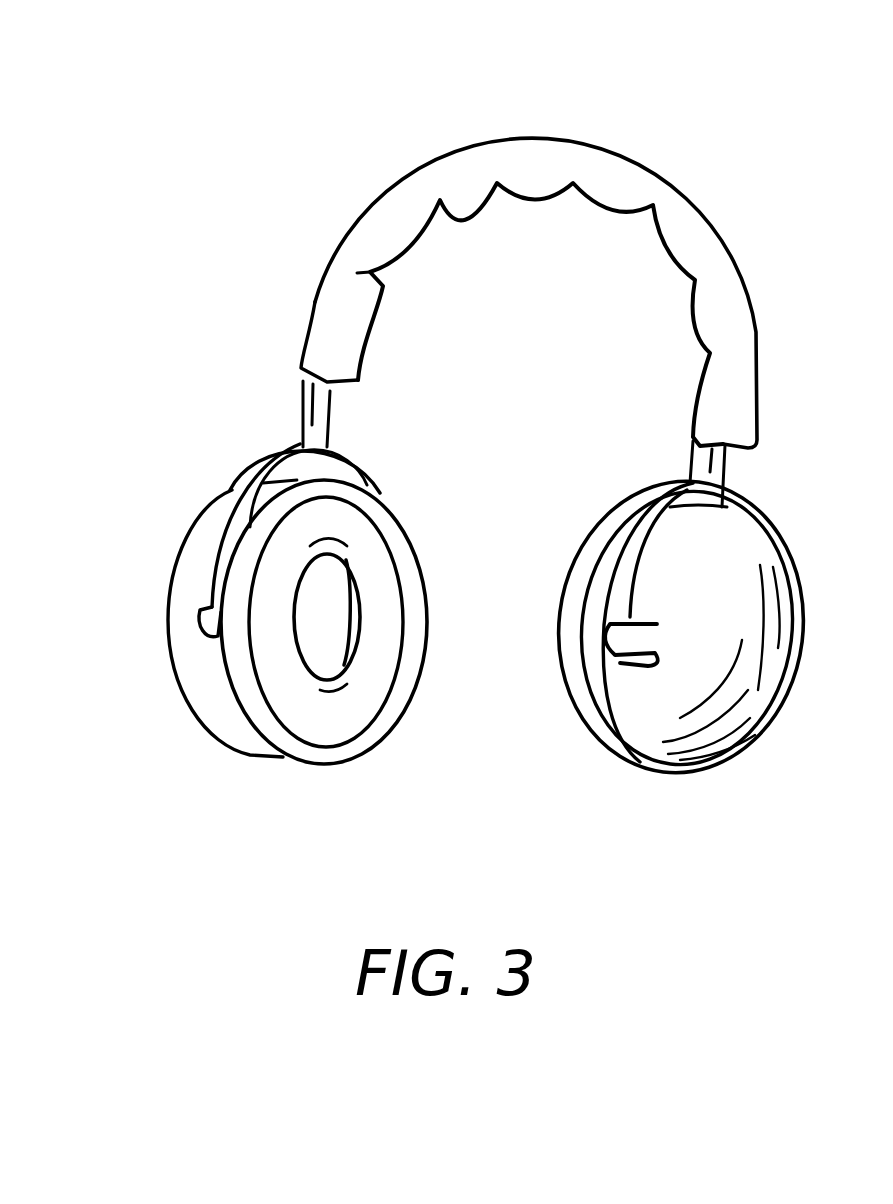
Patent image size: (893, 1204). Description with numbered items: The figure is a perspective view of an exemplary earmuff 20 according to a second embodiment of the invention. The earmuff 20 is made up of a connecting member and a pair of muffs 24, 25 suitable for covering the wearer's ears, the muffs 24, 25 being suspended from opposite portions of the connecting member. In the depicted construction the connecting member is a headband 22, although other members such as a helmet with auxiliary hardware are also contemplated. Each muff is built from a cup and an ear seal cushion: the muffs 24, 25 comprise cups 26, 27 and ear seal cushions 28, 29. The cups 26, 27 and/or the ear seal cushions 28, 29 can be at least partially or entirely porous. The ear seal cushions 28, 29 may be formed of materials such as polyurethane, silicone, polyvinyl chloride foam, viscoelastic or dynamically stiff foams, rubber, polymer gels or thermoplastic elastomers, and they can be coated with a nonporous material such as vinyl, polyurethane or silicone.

The earmuff 20 is at (522, 112).
The headband 22 is at (320, 318).
The muff 24 is at (187, 730).
The muff 25 is at (622, 765).
The cup 26 is at (182, 623).
The cup 27 is at (718, 728).
The ear seal cushion 28 is at (332, 725).
The ear seal cushion 29 is at (590, 543).